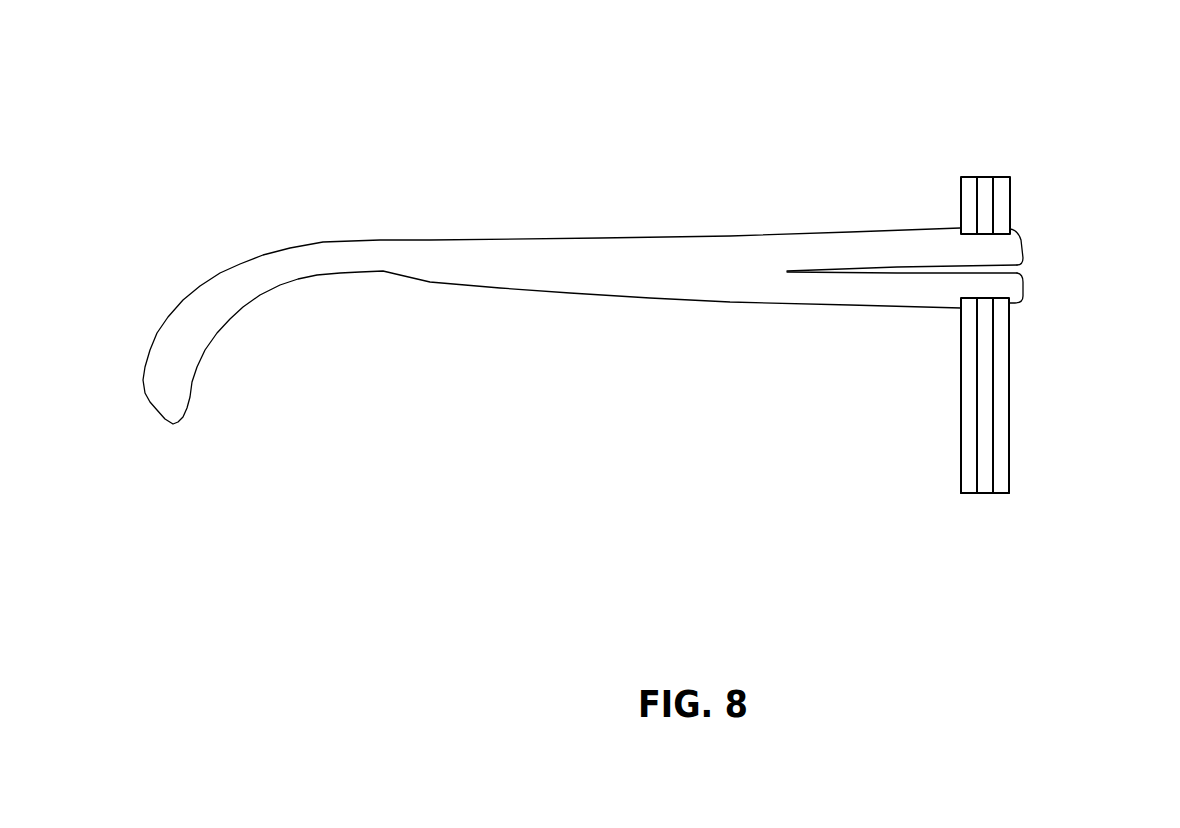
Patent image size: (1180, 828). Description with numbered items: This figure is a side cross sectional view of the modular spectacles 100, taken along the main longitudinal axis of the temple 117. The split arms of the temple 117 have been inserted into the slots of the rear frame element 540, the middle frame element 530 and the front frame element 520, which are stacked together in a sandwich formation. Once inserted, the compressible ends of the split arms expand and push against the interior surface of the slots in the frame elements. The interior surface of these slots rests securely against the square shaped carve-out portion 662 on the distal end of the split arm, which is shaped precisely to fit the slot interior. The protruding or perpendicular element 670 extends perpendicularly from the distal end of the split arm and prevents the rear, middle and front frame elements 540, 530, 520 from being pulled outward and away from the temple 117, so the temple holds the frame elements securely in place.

The modular spectacles 100 is at (594, 138).
The temple 117 is at (570, 293).
The protruding or perpendicular element 670 is at (1015, 224).
The front frame element 520 is at (1013, 412).
The rear frame element 540 is at (960, 397).
The square shaped carve-out portion 662 is at (993, 307).
The middle frame element 530 is at (985, 495).